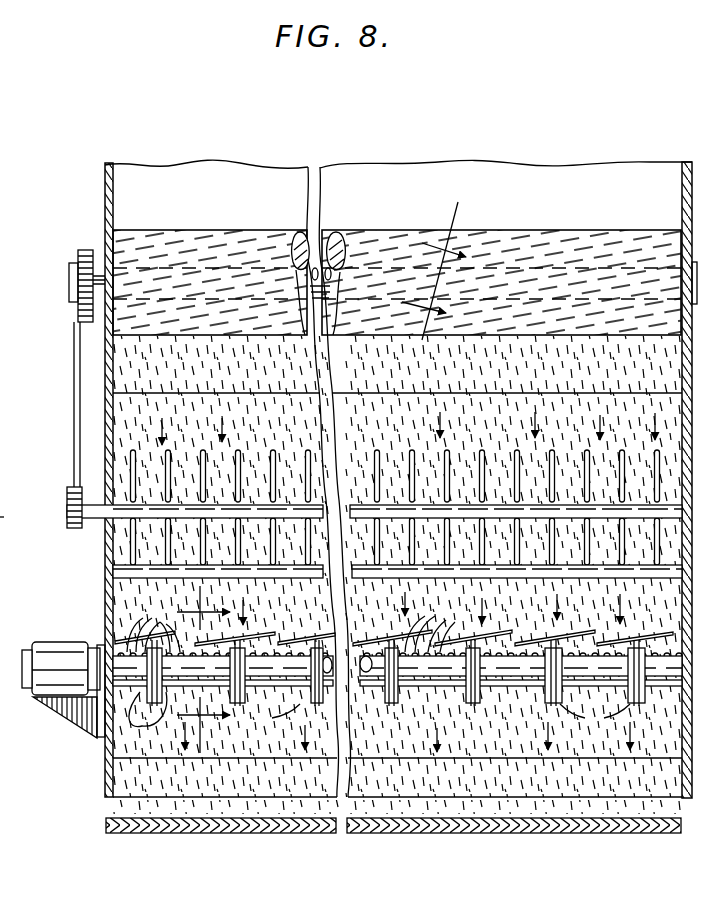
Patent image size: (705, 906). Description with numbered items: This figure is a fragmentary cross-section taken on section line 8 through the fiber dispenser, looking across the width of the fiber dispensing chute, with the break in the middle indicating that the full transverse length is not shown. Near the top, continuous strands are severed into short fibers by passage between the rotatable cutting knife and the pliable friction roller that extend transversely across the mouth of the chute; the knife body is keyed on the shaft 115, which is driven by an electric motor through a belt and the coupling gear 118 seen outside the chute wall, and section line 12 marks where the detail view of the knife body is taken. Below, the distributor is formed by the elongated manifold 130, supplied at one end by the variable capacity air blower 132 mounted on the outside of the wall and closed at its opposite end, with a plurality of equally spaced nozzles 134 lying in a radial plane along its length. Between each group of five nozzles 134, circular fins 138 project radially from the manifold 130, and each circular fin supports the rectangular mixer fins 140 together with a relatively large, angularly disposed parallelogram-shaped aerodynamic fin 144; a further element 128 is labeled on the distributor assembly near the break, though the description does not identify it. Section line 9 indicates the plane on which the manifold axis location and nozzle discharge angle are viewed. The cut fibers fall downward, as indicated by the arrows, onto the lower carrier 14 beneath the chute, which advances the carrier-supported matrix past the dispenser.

The section line 8— 8 is at (6, 520).
The section line 9— 9 is at (203, 669).
The section line 12— 12 is at (440, 271).
The lower carrier 14 is at (283, 832).
The shaft 115 is at (98, 276).
The coupling gear 118 is at (78, 254).
The blade 128 is at (316, 632).
The manifold 130 is at (500, 688).
The variable capacity air blower 132 is at (52, 650).
The nozzles 134 is at (425, 616).
The circular fins 138 is at (392, 704).
The mixer fins 140 is at (148, 722).
The aerodynamic fin 144 is at (498, 633).